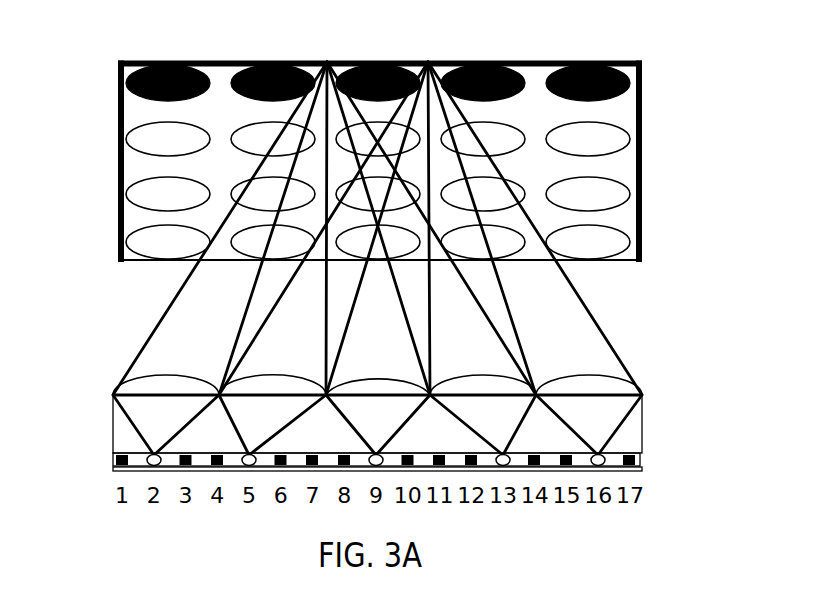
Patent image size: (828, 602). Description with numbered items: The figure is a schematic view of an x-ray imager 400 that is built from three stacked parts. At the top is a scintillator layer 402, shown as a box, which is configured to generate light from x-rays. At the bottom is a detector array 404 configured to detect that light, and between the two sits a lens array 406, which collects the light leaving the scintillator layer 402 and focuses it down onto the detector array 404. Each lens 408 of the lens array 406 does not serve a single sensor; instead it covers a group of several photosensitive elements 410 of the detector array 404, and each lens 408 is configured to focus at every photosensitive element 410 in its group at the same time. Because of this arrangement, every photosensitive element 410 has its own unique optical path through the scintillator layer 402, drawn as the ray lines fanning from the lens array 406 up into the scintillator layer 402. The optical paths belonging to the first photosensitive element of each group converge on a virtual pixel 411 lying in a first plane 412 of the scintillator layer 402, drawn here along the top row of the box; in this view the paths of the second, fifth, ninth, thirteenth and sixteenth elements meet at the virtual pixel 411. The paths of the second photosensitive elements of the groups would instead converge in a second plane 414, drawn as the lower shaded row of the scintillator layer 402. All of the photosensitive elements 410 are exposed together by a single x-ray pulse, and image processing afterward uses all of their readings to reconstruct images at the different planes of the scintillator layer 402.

The x-ray imager 400 is at (748, 209).
The scintillator layer 402 is at (620, 112).
The detector array 404 is at (642, 469).
The lens array 406 is at (642, 415).
The lens 408 is at (128, 377).
The photosensitive element 410 is at (118, 460).
The virtual pixel 411 is at (412, 62).
The first plane 412 is at (128, 83).
The second plane 414 is at (128, 243).